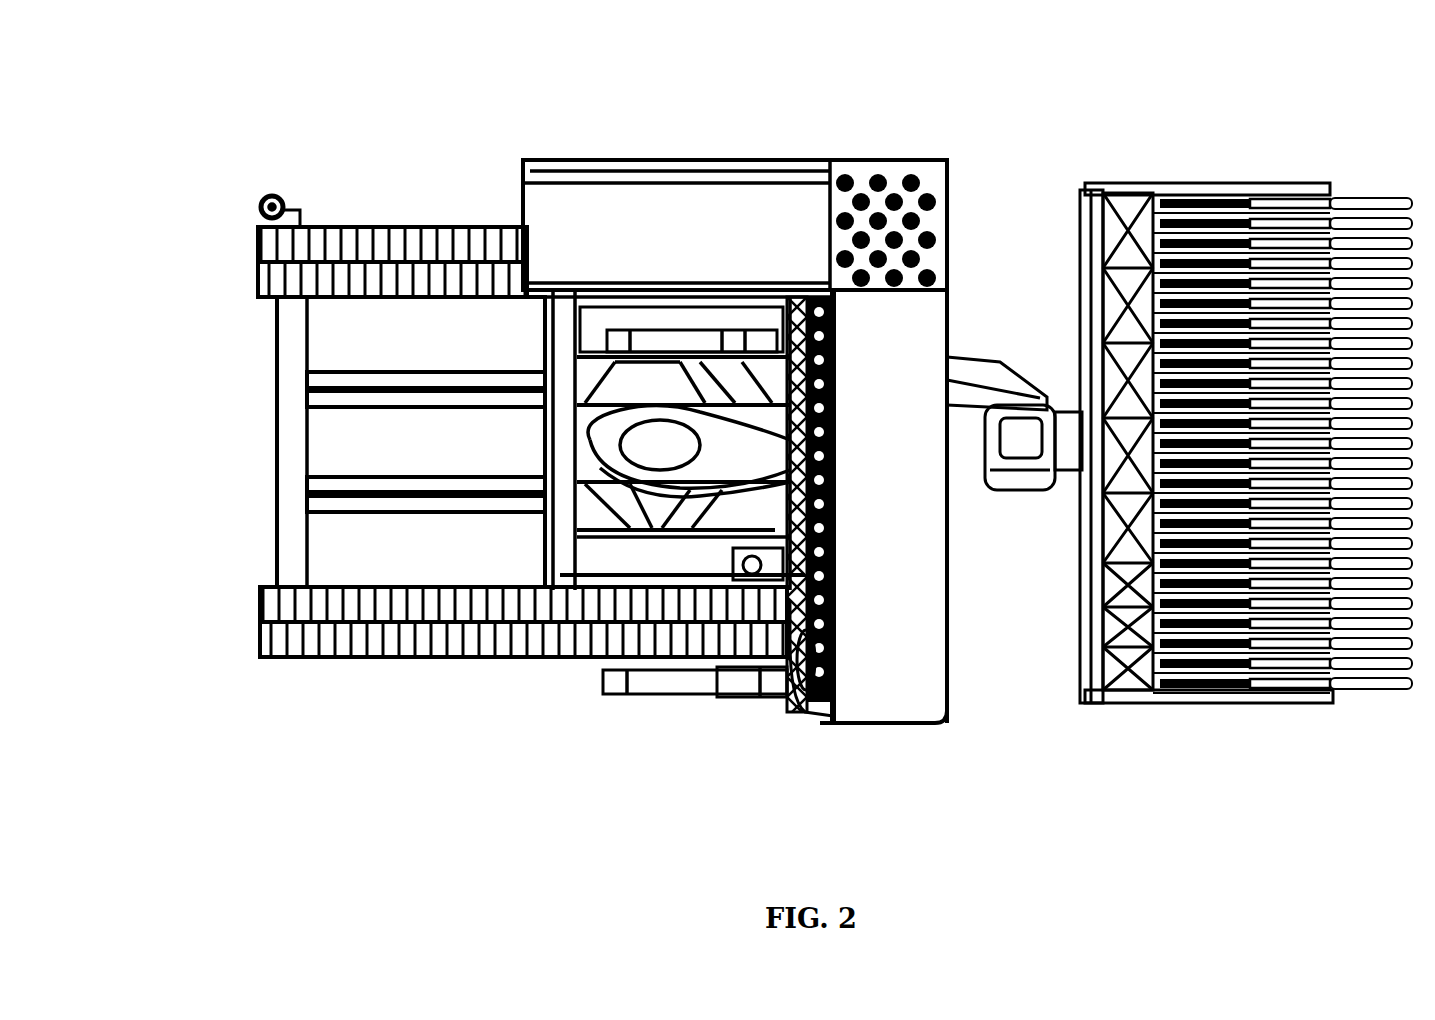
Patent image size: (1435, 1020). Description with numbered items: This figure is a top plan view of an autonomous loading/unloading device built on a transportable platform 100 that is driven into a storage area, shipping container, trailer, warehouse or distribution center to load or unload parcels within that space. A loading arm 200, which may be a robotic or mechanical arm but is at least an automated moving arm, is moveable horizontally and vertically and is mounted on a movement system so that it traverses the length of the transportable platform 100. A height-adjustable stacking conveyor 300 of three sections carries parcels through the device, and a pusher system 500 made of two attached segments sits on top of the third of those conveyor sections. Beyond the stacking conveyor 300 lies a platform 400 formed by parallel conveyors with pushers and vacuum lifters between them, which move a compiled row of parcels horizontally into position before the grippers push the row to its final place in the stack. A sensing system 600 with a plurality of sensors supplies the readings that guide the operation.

The transportable platform 100 is at (405, 228).
The loading arm 200 is at (590, 537).
The stacking conveyor 300 is at (790, 160).
The platform 400 is at (1232, 190).
The pusher system 500 is at (800, 710).
The sensing system 600 is at (258, 205).